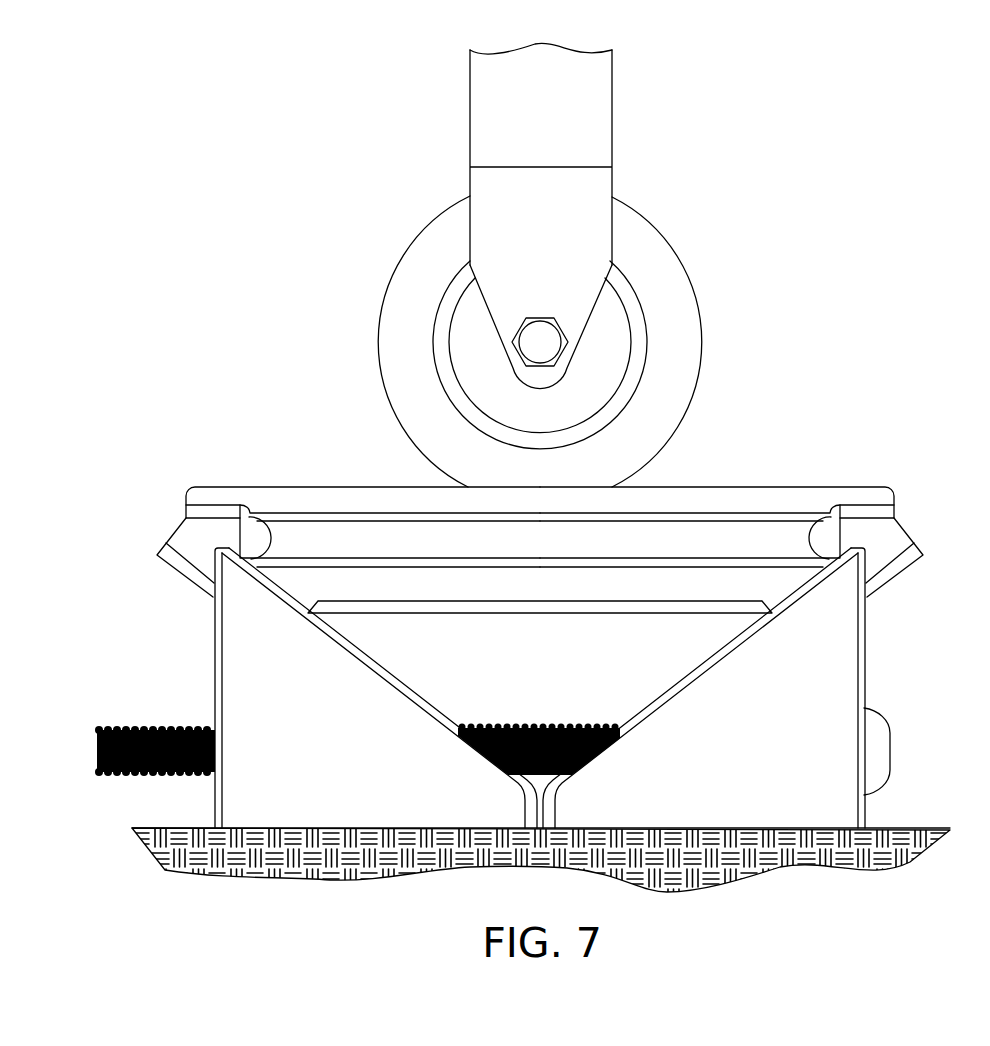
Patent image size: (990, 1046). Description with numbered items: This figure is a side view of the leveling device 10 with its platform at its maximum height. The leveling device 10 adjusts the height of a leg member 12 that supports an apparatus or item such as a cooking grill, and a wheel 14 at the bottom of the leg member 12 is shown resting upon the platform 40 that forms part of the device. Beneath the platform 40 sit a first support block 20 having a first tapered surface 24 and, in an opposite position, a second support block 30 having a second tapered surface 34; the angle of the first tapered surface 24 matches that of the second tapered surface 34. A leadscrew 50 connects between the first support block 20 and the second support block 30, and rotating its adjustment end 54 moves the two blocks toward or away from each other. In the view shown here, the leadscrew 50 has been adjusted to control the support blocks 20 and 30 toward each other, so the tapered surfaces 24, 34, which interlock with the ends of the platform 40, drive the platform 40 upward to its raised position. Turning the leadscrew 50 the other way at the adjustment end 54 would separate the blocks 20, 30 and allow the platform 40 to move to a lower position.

The leveling device 10 is at (838, 447).
The leg member 12 is at (575, 108).
The wheel 14 is at (675, 298).
The first support block 20 is at (347, 749).
The first tapered surface 24 is at (402, 688).
The second support block 30 is at (762, 749).
The second tapered surface 34 is at (685, 681).
The platform 40 is at (335, 498).
The leadscrew 50 is at (527, 712).
The adjustment end 54 is at (897, 706).